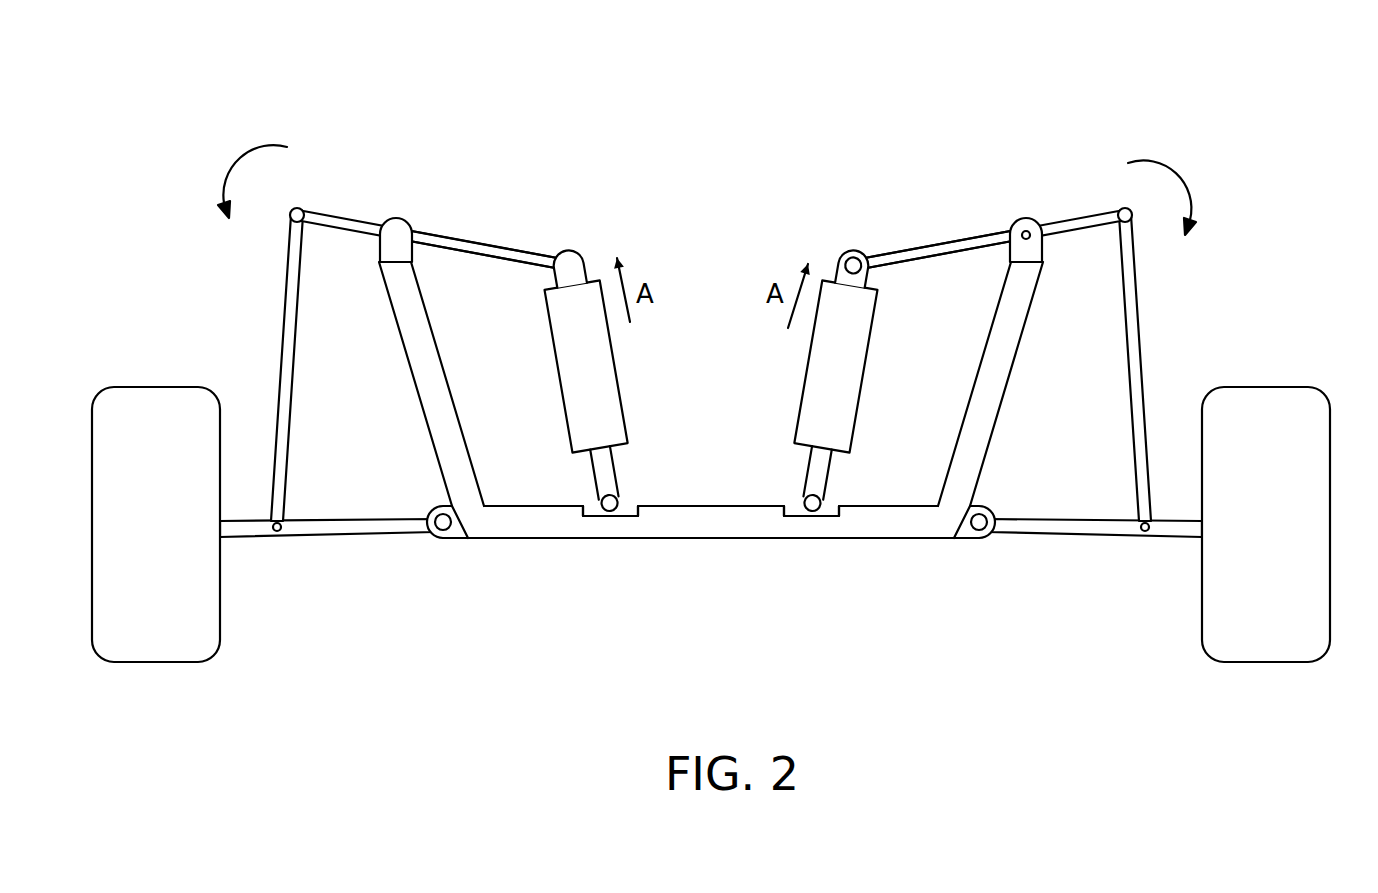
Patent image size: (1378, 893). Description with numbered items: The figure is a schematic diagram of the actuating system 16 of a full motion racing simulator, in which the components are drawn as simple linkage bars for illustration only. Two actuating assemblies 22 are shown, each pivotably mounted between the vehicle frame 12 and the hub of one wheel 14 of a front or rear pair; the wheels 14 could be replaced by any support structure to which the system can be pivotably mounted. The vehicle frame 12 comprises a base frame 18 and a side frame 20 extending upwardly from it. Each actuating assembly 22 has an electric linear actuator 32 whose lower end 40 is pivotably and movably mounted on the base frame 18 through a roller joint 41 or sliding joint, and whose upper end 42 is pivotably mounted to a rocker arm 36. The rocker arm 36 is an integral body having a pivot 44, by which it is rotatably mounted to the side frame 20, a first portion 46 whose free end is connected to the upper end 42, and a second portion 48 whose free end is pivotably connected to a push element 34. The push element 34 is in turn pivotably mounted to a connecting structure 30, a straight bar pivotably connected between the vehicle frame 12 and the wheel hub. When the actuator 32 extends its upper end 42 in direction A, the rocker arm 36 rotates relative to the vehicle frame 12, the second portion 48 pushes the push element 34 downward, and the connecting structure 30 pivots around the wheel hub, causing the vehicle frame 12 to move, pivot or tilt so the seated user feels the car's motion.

The vehicle frame 12 is at (862, 547).
The wheel 14 is at (92, 573).
The actuating system 16 is at (696, 68).
The base frame 18 is at (700, 540).
The side frame 20 is at (420, 393).
The actuating assembly 22 is at (422, 125).
The connecting structure 30 is at (357, 540).
The actuator 32 is at (807, 367).
The push element 34 is at (278, 368).
The rocker arm 36 is at (457, 231).
The lower end 40 is at (618, 503).
The roller joint 41 is at (597, 515).
The upper end 42 is at (582, 254).
The pivot 44 is at (403, 218).
The first portion 46 is at (510, 248).
The second portion 48 is at (344, 211).